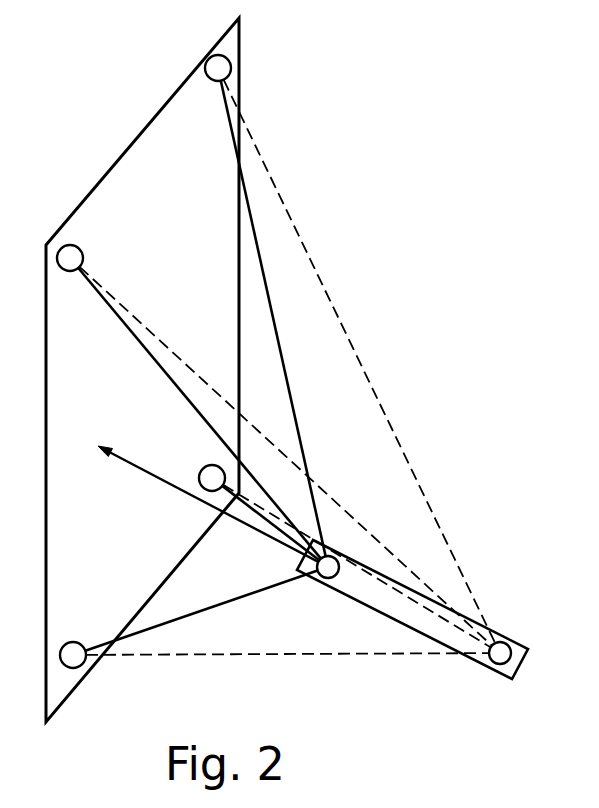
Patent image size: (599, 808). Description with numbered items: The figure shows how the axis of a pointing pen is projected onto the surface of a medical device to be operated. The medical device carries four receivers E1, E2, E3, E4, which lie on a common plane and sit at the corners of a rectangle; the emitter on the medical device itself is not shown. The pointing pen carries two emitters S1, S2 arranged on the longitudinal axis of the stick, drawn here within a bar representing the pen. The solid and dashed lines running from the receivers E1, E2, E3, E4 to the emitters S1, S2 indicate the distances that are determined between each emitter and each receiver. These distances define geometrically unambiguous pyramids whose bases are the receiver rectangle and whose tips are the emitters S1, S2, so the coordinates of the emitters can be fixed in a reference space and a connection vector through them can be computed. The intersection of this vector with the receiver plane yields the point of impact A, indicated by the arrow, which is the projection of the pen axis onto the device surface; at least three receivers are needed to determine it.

The receiver E1 is at (274, 445).
The receiver E2 is at (342, 349).
The receiver E3 is at (273, 619).
The receiver E4 is at (334, 539).
The emitter S1 is at (315, 587).
The emitter S2 is at (489, 673).
The point of impact A is at (197, 503).